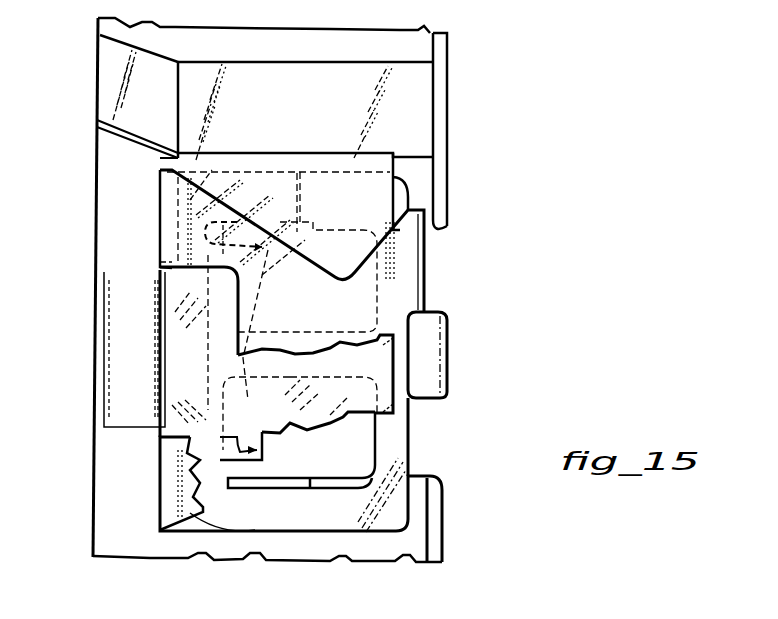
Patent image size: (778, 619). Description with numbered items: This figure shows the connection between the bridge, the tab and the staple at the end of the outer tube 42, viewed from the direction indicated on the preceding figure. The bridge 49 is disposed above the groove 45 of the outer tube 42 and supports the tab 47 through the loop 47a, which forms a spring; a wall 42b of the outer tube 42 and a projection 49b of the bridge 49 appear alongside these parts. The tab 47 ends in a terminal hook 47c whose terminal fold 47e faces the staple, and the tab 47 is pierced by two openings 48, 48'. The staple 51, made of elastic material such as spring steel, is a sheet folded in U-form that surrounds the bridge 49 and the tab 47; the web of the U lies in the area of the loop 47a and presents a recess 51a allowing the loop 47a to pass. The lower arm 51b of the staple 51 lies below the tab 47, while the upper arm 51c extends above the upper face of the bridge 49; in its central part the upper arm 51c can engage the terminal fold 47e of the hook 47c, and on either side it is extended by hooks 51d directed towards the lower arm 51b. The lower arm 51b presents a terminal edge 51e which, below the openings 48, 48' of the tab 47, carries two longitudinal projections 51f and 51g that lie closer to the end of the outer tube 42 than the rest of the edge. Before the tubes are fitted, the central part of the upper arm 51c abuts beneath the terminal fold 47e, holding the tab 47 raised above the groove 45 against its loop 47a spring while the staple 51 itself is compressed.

The outer tube 42 is at (115, 529).
The housing wall 42b is at (441, 150).
The groove 45 is at (420, 418).
The tab 47 is at (387, 509).
The loop 47a is at (126, 427).
The terminal hook 47c is at (447, 358).
The terminal fold 47e is at (430, 370).
The opening 48 is at (371, 351).
The opening 48' is at (344, 450).
The bridge 49 is at (338, 197).
The plate projection 49b is at (395, 200).
The staple 51 is at (160, 234).
The recess 51a is at (237, 302).
The lower arm 51b is at (190, 445).
The upper arm 51c is at (309, 312).
The hooks 51d is at (425, 272).
The terminal edge 51e is at (252, 408).
The longitudinal projection 51f is at (160, 262).
The longitudinal projection 51g is at (208, 492).